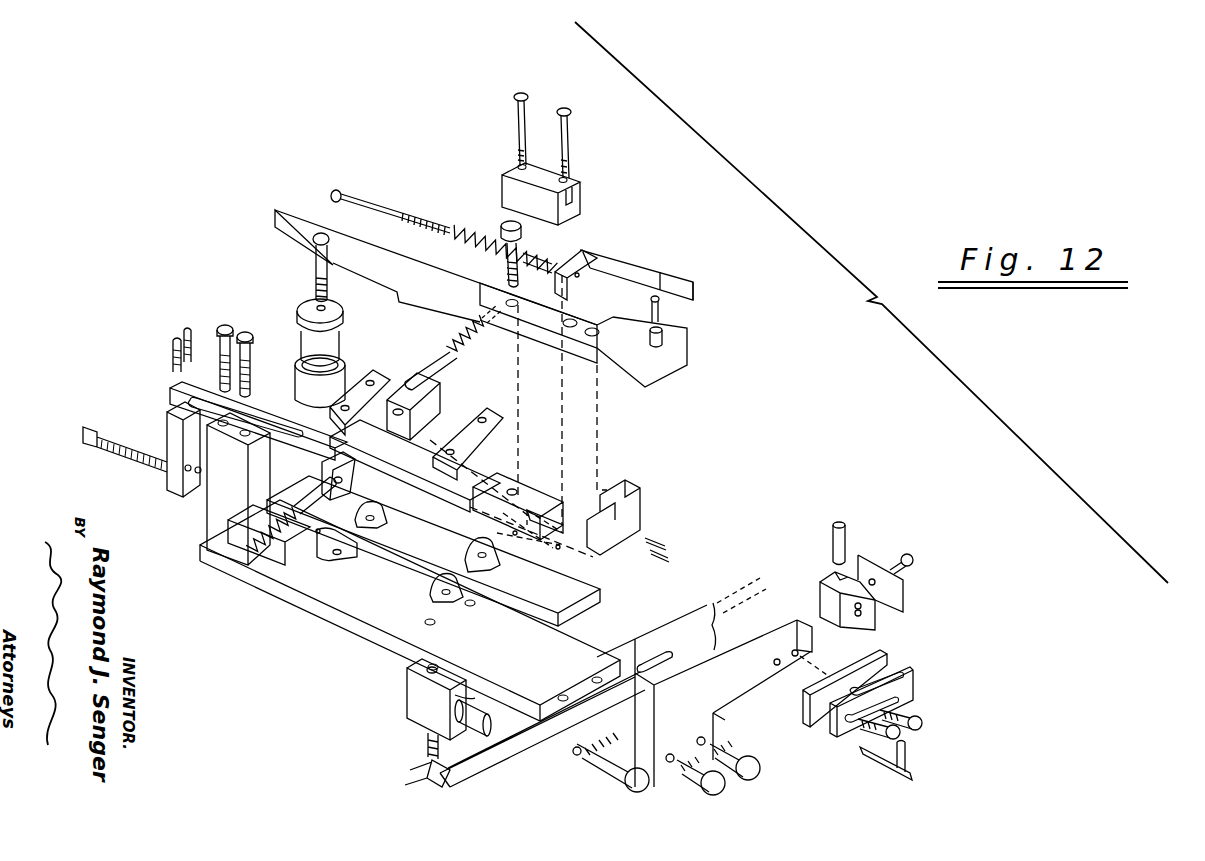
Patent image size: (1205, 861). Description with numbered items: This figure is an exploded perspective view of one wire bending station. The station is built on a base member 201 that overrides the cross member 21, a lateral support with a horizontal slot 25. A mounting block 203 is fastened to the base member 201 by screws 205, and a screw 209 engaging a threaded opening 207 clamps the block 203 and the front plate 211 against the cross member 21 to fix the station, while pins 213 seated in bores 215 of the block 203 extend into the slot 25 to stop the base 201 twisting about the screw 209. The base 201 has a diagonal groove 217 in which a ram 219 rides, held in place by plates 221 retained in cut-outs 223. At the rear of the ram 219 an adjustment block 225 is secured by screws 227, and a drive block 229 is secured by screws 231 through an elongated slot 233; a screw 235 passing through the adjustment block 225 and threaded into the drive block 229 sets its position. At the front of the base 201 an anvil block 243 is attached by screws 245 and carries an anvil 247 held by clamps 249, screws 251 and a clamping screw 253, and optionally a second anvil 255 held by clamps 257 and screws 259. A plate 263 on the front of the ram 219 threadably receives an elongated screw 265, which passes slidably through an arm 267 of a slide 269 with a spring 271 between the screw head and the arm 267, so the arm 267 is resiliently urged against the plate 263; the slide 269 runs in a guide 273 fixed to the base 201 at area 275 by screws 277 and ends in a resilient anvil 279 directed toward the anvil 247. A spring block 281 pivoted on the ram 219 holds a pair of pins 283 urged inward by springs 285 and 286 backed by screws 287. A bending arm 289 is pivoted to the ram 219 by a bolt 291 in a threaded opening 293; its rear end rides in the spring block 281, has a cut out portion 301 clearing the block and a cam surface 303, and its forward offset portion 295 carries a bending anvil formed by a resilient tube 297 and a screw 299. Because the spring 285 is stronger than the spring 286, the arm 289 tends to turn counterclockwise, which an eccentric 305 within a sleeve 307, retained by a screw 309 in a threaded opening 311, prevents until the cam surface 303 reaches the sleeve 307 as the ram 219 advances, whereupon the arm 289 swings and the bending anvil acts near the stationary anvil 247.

The cross member 21 is at (655, 631).
The horizontal slot 25 is at (718, 640).
The base member 201 is at (373, 627).
The mounting block 203 is at (407, 690).
The screws 205 is at (428, 766).
The threaded opening 207 is at (480, 690).
The screw 209 is at (625, 788).
The front plate 211 is at (540, 782).
The pins 213 is at (425, 742).
The bores 215 is at (462, 698).
The diagonal groove 217 is at (570, 590).
The ram 219 is at (496, 475).
The plates 221 is at (360, 372).
The cut-outs 223 is at (386, 515).
The adjustment block 225 is at (167, 435).
The screws 227 is at (186, 326).
The drive block 229 is at (205, 520).
The screws 231 is at (243, 330).
The elongated slot 233 is at (262, 412).
The screw 235 is at (88, 428).
The anvil block 243 is at (740, 697).
The screws 245 is at (725, 785).
The anvil 247 is at (832, 545).
The clamps 249 is at (880, 618).
The screws 251 is at (880, 605).
The clamping screw 253 is at (912, 558).
The second anvil 255 is at (900, 778).
The clamps 257 is at (830, 733).
The screws 259 is at (922, 727).
The plate 263 is at (632, 513).
The elongated screw 265 is at (367, 208).
The arm 267 is at (578, 262).
The slide 269 is at (615, 270).
The spring 271 is at (455, 230).
The guide 273 is at (575, 180).
The area 275 is at (585, 565).
The screws 277 is at (562, 107).
The anvil 279 is at (683, 271).
The spring block 281 is at (402, 372).
The pins 283 is at (445, 372).
The spring 285 is at (470, 318).
The spring 286 is at (283, 533).
The screws 287 is at (505, 325).
The bending arm 289 is at (540, 348).
The bolt 291 is at (505, 222).
The threaded opening 293 is at (517, 492).
The offset portion 295 is at (688, 355).
The resilient tube 297 is at (664, 328).
The screw 299 is at (661, 310).
The cut out portion 301 is at (383, 285).
The cam surface 303 is at (290, 232).
The eccentric 305 is at (298, 316).
The sleeve 307 is at (297, 368).
The screw 309 is at (315, 270).
The threaded opening 311 is at (322, 538).